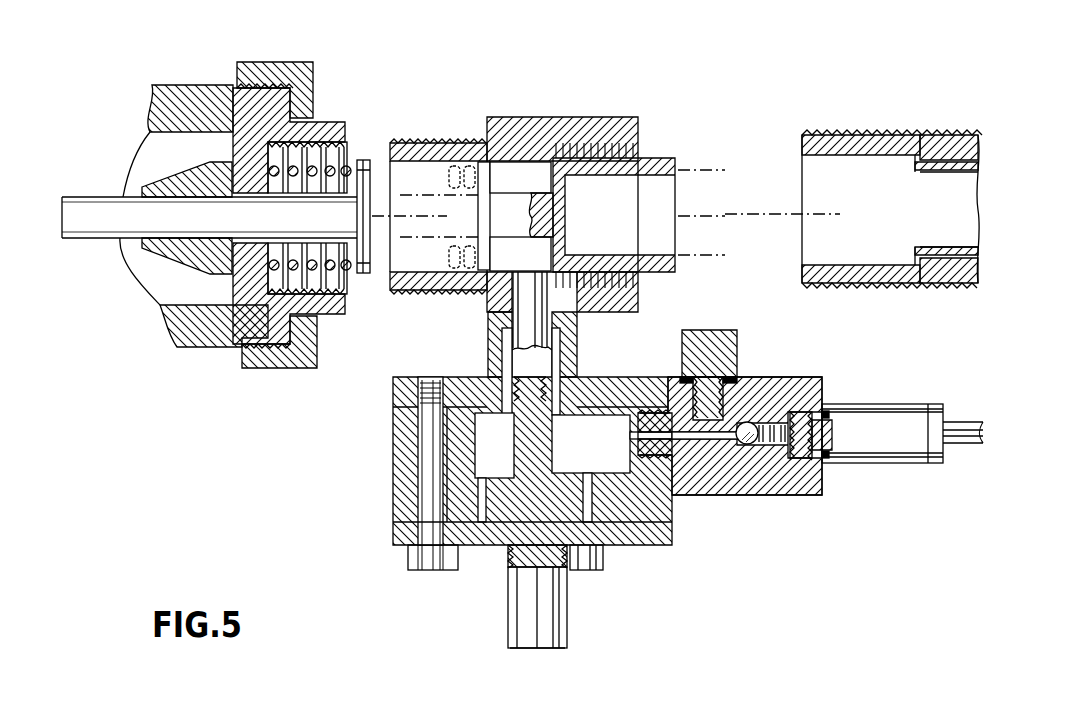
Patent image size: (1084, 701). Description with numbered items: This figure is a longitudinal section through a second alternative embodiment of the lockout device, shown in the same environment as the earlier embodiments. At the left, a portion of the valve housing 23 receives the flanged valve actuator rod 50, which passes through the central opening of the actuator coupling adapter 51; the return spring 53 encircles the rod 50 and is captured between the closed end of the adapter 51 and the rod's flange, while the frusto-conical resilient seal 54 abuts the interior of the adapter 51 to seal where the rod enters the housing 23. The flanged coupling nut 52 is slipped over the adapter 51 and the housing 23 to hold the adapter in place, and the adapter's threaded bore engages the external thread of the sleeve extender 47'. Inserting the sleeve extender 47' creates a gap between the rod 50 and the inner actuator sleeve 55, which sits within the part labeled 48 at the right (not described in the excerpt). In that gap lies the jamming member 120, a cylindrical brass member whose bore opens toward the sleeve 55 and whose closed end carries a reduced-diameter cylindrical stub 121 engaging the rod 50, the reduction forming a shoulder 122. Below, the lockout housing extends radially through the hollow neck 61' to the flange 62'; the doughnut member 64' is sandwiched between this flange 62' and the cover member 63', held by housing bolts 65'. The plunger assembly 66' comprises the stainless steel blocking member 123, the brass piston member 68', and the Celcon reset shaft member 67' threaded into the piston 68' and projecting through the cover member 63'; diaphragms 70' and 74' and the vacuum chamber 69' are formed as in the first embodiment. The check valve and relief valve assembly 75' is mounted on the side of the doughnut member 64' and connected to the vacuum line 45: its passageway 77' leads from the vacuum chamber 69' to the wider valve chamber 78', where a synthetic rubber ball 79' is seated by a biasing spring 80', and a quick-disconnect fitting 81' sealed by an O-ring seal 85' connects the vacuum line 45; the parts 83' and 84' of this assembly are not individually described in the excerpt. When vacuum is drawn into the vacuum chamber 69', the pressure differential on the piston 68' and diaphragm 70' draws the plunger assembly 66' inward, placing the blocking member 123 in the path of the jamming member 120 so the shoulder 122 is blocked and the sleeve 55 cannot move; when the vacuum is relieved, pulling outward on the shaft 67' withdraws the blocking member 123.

The valve housing 23 is at (197, 84).
The flanged coupling nut 52 is at (313, 76).
The actuator coupling adapter 51 is at (320, 122).
The return spring 53 is at (340, 133).
The frusto-conical resilient seal 54 is at (153, 185).
The valve actuator rod 50 is at (115, 222).
The sleeve extender 47' is at (514, 196).
The jamming member 120 is at (655, 159).
The cylindrical stub 121 is at (503, 190).
The shoulder 122 is at (553, 255).
The blocking member 123 is at (520, 307).
The pipe 48 is at (868, 134).
The inner actuator sleeve 55 is at (915, 197).
The circular flange 62' is at (532, 447).
The diaphragm 74' is at (530, 376).
The hollow neck 61' is at (553, 364).
The doughnut member 64' is at (402, 473).
The vacuum chamber 69' is at (494, 467).
The piston member 68' is at (591, 468).
The diaphragm 70' is at (630, 452).
The cover member 63' is at (586, 553).
The housing bolts 65' is at (431, 580).
The reset shaft member 67' is at (566, 596).
The plunger assembly 66' is at (560, 666).
The ball 79' is at (737, 421).
The check valve and relief valve assembly 75' is at (746, 477).
The plug 83' is at (710, 359).
The seal 84' is at (729, 365).
The passageway 77' is at (705, 490).
The valve chamber 78' is at (768, 474).
The biasing spring 80' is at (828, 418).
The O-ring seal 85' is at (849, 455).
The quick-disconnect fitting 81' is at (882, 433).
The vacuum line 45 is at (970, 446).